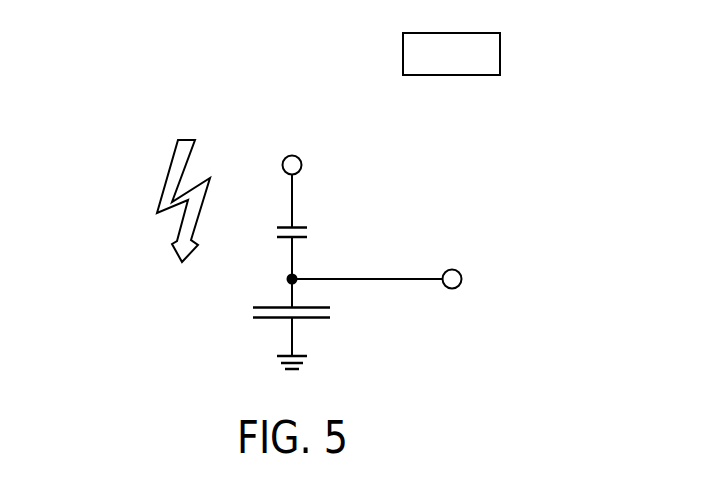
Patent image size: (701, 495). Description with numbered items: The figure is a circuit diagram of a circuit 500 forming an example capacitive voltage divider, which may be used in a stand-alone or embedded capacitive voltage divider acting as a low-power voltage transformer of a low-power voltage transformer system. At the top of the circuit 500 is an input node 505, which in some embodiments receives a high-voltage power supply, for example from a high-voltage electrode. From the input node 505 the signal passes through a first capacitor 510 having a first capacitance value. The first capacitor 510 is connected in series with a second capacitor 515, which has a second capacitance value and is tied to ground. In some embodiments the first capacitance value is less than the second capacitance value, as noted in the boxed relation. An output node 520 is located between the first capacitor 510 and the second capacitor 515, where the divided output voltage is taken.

The circuit 500 is at (146, 79).
The input node 505 is at (302, 165).
The first capacitor 510 is at (285, 238).
The second capacitor 515 is at (273, 318).
The output node 520 is at (462, 280).